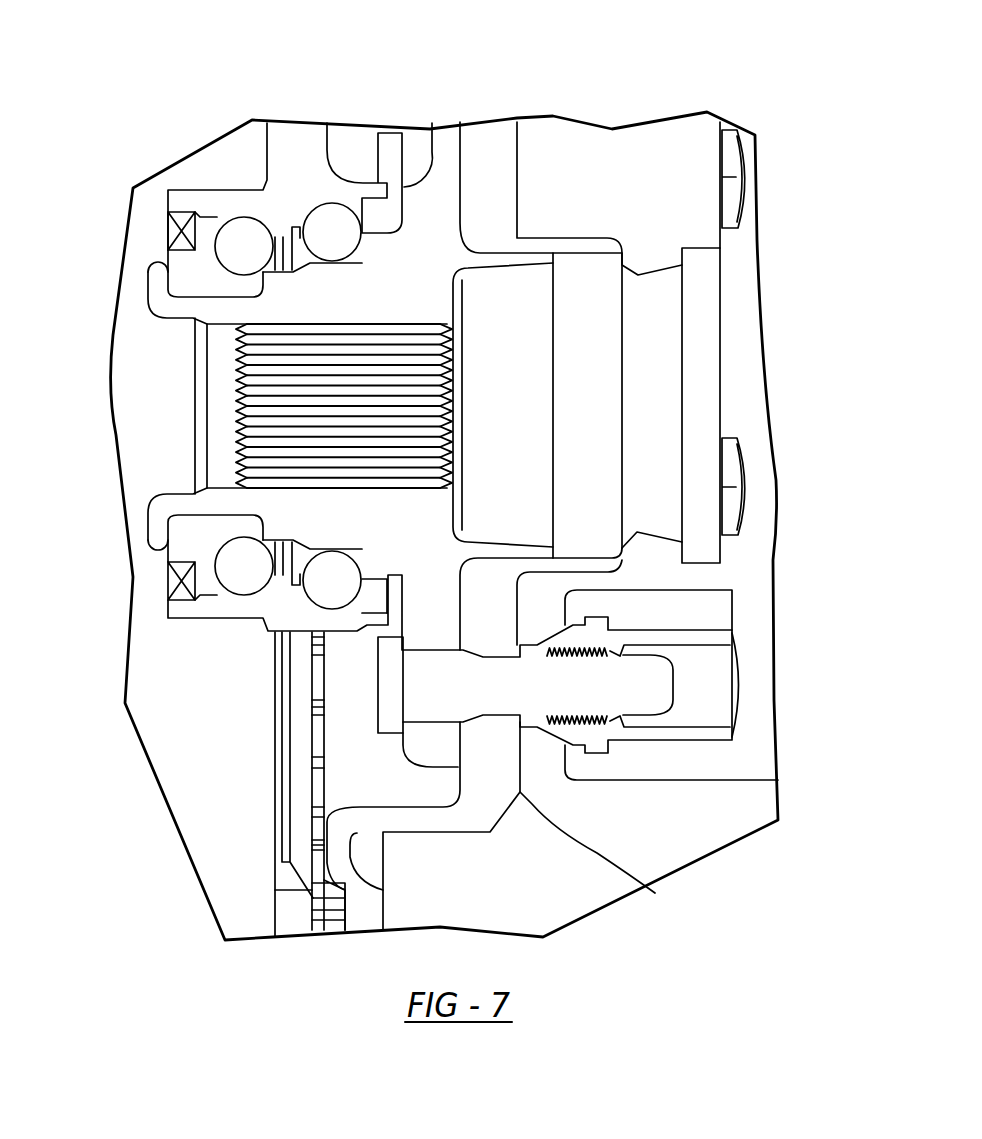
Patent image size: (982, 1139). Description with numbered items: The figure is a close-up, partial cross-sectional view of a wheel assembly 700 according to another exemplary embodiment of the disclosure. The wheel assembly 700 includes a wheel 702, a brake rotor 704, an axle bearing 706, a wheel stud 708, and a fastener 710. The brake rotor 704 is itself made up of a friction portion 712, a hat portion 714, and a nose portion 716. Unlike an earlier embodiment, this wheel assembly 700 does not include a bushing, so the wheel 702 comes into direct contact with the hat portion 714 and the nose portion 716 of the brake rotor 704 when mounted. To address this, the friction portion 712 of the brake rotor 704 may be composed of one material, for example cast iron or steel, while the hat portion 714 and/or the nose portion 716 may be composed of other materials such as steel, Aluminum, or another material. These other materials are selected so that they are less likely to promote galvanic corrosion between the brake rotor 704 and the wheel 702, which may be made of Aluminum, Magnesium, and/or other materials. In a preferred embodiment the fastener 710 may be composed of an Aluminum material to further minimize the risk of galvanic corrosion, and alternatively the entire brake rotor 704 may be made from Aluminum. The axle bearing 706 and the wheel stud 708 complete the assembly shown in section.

The wheel assembly 700 is at (122, 132).
The wheel 702 is at (548, 158).
The brake rotor 704 is at (275, 685).
The axle bearing 706 is at (220, 388).
The wheel stud 708 is at (445, 675).
The fastener 710 is at (693, 732).
The friction portion 712 is at (295, 910).
The hat portion 714 is at (492, 800).
The nose portion 716 is at (597, 385).